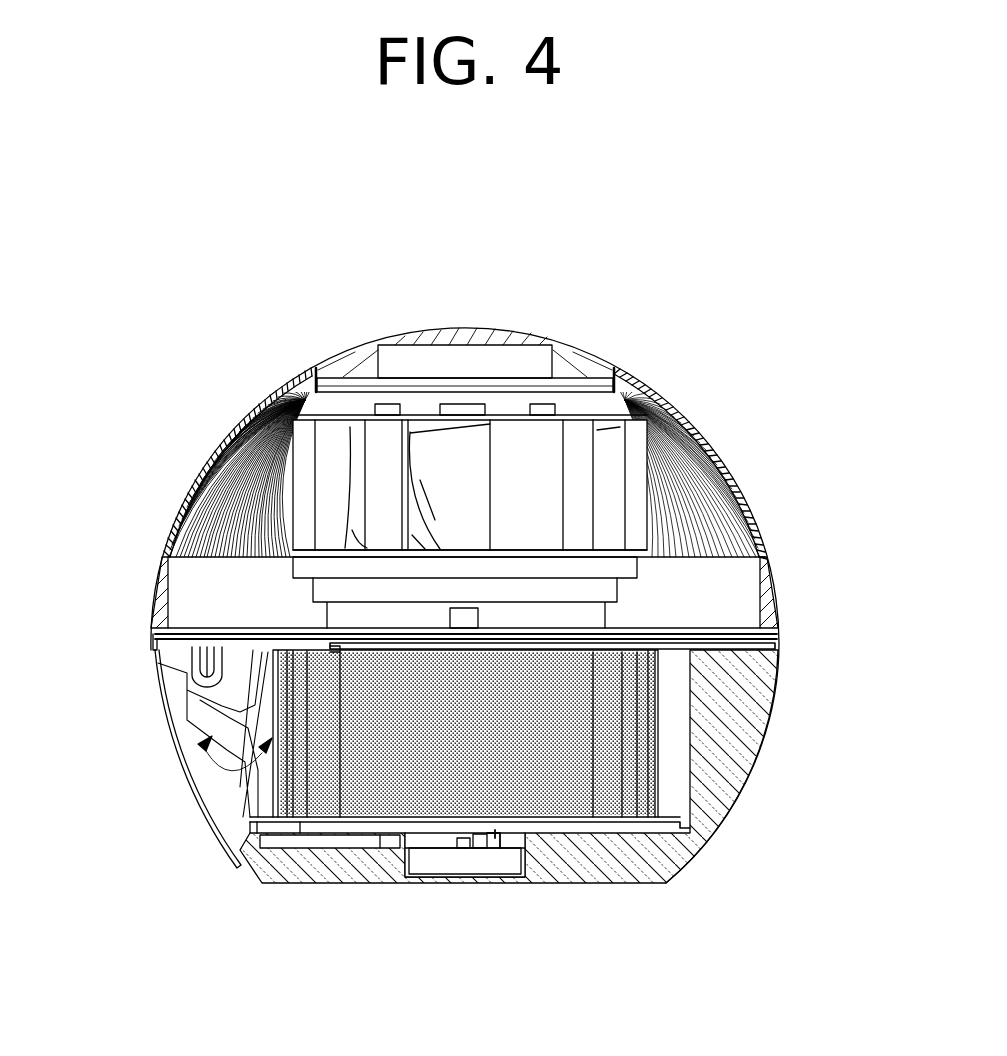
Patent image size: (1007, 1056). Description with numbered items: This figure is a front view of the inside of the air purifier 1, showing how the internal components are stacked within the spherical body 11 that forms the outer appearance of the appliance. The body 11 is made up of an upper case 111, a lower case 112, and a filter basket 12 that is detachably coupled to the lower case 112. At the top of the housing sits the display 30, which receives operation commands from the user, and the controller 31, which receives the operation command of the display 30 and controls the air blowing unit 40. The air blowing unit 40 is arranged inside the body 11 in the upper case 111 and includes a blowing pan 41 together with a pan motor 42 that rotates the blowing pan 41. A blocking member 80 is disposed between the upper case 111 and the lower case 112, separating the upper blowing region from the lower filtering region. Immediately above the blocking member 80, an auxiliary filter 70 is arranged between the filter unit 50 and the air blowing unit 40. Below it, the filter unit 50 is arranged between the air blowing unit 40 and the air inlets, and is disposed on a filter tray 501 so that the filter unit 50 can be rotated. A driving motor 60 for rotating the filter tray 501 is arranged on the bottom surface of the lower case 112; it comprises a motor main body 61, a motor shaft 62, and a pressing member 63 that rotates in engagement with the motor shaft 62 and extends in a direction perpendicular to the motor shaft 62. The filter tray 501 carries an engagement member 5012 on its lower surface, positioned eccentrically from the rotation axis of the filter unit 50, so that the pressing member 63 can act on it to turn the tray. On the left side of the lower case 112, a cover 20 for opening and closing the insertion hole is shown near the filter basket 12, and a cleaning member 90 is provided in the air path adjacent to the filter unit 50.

The air purifier 1 is at (465, 208).
The body 11 is at (867, 490).
The upper case 111 is at (737, 485).
The lower case 112 is at (770, 705).
The filter basket 12 is at (155, 650).
The cover 20 is at (207, 818).
The display 30 is at (467, 316).
The controller 31 is at (528, 358).
The air blowing unit 40 is at (790, 392).
The blowing pan 41 is at (630, 441).
The pan motor 42 is at (580, 400).
The filter unit 50 is at (233, 860).
The filter tray 501 is at (332, 827).
The engagement member 5012 is at (490, 835).
The driving motor 60 is at (438, 950).
The motor main body 61 is at (433, 860).
The motor shaft 62 is at (463, 857).
The pressing member 63 is at (493, 837).
The auxiliary filter 70 is at (597, 607).
The blocking member 80 is at (717, 642).
The cleaning member 90 is at (205, 742).